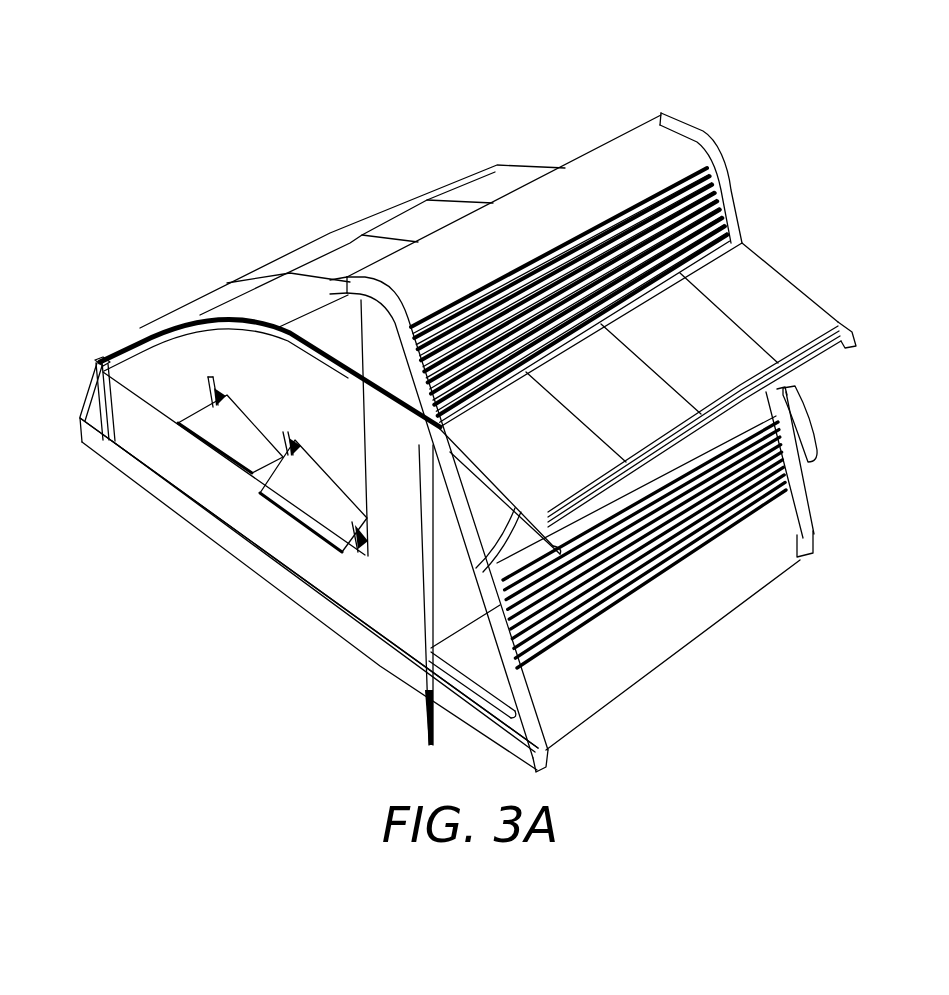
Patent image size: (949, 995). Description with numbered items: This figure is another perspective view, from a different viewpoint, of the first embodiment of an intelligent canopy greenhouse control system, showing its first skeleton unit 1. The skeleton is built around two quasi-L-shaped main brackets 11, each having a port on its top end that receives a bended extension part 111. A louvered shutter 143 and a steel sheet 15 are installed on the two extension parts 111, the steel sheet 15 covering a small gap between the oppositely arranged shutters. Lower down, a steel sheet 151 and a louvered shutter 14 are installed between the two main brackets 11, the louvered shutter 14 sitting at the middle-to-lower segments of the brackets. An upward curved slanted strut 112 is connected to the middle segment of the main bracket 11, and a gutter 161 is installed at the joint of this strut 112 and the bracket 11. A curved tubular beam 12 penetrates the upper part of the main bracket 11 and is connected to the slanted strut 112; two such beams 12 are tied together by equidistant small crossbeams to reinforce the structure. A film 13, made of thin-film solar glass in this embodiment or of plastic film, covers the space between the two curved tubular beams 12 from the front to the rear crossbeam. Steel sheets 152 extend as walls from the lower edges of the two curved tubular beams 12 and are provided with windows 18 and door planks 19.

The first skeleton unit 1 is at (253, 196).
The main bracket 11 is at (523, 693).
The bended extension part 111 is at (713, 132).
The upward curved slanted strut 112 is at (497, 543).
The curved tubular beam 12 is at (150, 337).
The film 13 is at (445, 184).
The louvered shutter 14 is at (712, 513).
The louvered shutter 143 is at (720, 207).
The steel sheet 15 is at (614, 163).
The steel sheet 151 is at (800, 463).
The steel sheet wall 152 is at (183, 470).
The gutter 161 is at (833, 313).
The window 18 is at (300, 510).
The door plank 19 is at (421, 698).